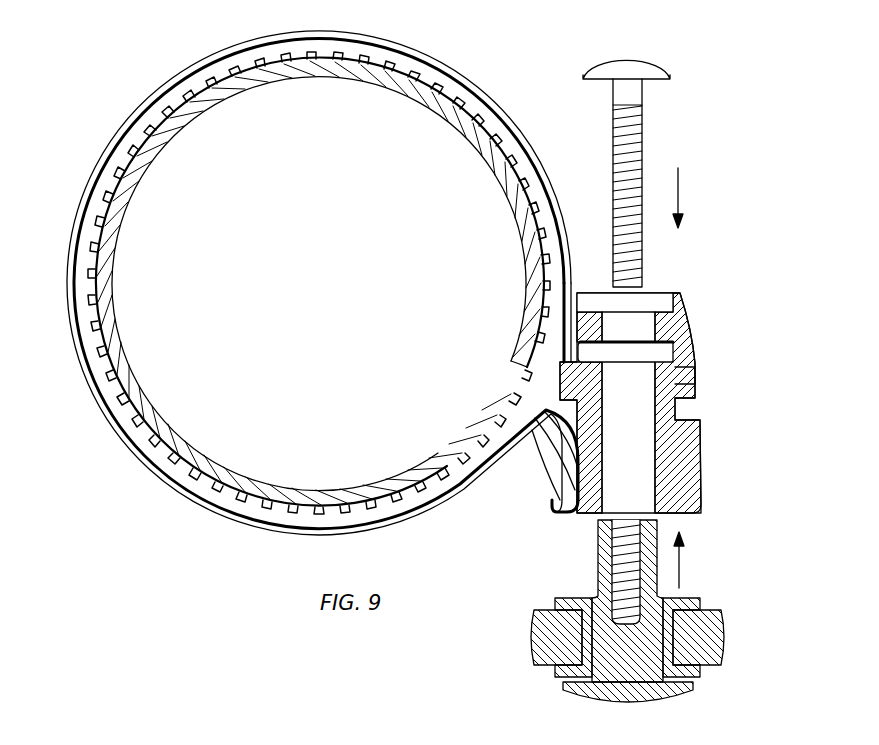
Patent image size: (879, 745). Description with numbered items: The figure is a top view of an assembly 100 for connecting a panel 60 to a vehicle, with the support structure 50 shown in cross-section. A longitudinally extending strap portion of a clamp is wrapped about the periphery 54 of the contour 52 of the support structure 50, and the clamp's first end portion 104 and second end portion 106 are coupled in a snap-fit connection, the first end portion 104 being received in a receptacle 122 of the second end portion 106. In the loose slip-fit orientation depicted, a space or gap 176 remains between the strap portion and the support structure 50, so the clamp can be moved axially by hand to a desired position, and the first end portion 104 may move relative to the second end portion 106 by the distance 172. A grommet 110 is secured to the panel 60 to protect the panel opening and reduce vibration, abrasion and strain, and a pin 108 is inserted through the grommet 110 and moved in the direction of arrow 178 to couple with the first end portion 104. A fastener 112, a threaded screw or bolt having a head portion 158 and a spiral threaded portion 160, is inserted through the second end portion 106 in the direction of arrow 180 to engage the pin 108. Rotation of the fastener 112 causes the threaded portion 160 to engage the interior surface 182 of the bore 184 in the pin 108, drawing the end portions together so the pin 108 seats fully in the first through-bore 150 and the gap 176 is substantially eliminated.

The support structure 50 is at (317, 72).
The contour 52 is at (547, 405).
The periphery 54 is at (552, 378).
The panel 60 is at (722, 636).
The assembly 100 is at (741, 433).
The first end portion 104 is at (708, 506).
The second end portion 106 is at (708, 318).
The pin 108 is at (686, 700).
The grommet 110 is at (712, 600).
The fastener 112 is at (657, 108).
The receptacle 122 is at (653, 349).
The first through-bore 150 is at (630, 452).
The head portion 158 is at (629, 62).
The threaded portion 160 is at (642, 256).
The distance 172 is at (695, 367).
The gap 176 is at (578, 373).
The arrow 178 is at (682, 559).
The arrow 180 is at (679, 177).
The interior surface 182 is at (607, 590).
The bore 184 is at (617, 547).